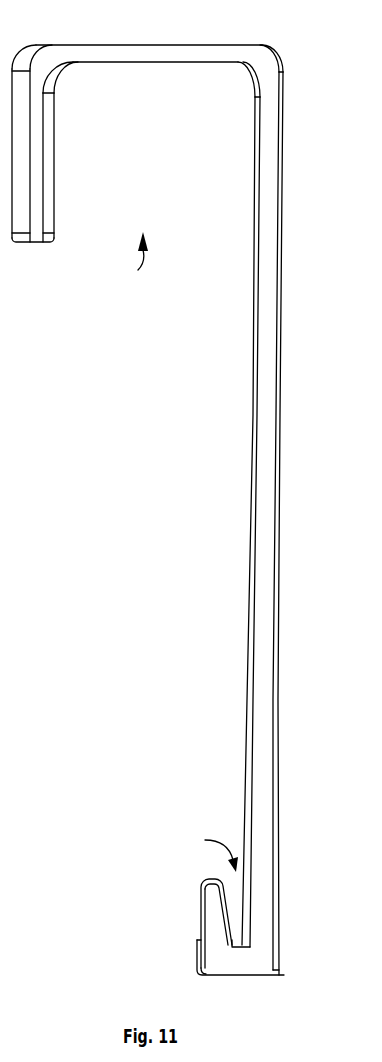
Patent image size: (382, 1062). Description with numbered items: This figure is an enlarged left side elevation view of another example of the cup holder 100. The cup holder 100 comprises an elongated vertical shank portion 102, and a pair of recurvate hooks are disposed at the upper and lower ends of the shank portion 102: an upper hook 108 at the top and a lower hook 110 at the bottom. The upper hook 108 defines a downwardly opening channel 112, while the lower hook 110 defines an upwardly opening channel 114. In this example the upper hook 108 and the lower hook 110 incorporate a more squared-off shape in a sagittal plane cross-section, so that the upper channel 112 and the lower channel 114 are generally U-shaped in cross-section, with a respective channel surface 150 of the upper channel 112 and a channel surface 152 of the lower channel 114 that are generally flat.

The cup holder 100 is at (180, 518).
The elongated vertical shank portion 102 is at (280, 417).
The upper hook 108 is at (264, 50).
The lower hook 110 is at (282, 975).
The downwardly opening channel 112 is at (120, 265).
The upwardly opening channel 114 is at (200, 849).
The channel surface 150 is at (168, 60).
The channel surface 152 is at (235, 957).